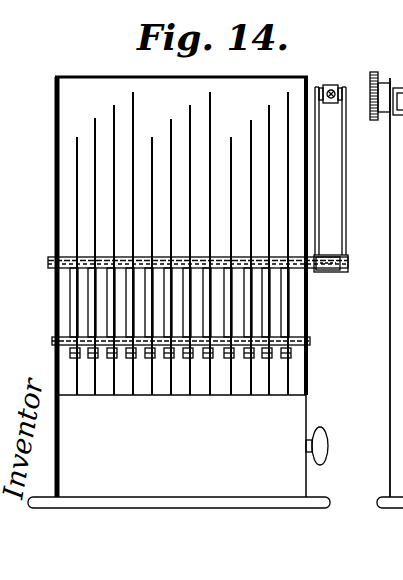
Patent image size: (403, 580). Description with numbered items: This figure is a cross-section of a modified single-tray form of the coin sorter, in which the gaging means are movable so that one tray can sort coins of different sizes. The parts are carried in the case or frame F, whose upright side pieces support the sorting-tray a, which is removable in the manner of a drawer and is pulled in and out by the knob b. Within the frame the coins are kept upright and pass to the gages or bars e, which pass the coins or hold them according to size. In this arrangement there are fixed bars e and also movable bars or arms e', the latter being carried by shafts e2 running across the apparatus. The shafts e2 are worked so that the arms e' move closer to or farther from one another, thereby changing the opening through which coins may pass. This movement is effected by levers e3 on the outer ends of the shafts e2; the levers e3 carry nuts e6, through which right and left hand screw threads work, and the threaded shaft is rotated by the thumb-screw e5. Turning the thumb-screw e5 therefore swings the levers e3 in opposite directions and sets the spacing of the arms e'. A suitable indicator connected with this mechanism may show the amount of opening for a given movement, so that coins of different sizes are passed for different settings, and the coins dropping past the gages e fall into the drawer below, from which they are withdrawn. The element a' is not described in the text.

The case or frame F is at (215, 276).
The sorting-tray a is at (181, 427).
The wires a' is at (188, 243).
The shaft e2 is at (72, 268).
The movable bar or arm e' is at (189, 303).
The gage or bar e is at (177, 348).
The lever e3 is at (318, 155).
The nut e6 is at (330, 90).
The thumb-screw e5 is at (372, 80).
The knob b is at (328, 443).